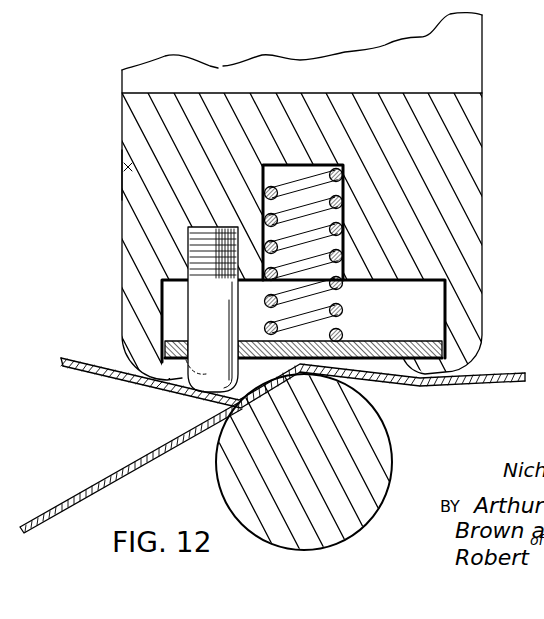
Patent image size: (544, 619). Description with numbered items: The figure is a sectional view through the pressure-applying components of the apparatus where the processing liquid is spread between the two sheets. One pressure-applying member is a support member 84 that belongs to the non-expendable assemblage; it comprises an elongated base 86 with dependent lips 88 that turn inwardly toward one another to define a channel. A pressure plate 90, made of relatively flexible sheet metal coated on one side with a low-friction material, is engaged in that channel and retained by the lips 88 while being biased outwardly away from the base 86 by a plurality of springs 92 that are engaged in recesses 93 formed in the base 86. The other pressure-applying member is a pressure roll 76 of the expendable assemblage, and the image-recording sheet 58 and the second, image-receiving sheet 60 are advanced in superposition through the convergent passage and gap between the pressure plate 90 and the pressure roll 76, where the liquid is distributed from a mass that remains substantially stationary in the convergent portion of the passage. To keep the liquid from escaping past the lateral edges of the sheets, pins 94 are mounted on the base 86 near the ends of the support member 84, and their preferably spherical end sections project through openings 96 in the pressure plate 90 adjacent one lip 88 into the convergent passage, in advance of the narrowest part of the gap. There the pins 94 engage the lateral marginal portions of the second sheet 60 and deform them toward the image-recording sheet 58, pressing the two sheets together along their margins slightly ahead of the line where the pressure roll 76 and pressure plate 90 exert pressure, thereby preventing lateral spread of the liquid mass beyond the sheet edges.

The support member 84 is at (484, 141).
The elongated base 86 is at (143, 165).
The dependent lips 88 is at (137, 333).
The pressure plate 90 is at (382, 342).
The springs 92 is at (335, 166).
The recesses 93 is at (360, 283).
The pins 94 is at (205, 310).
The openings 96 is at (268, 345).
The pressure roll 76 is at (389, 432).
The image-receiving sheet 60 is at (90, 370).
The image-recording sheet 58 is at (165, 453).